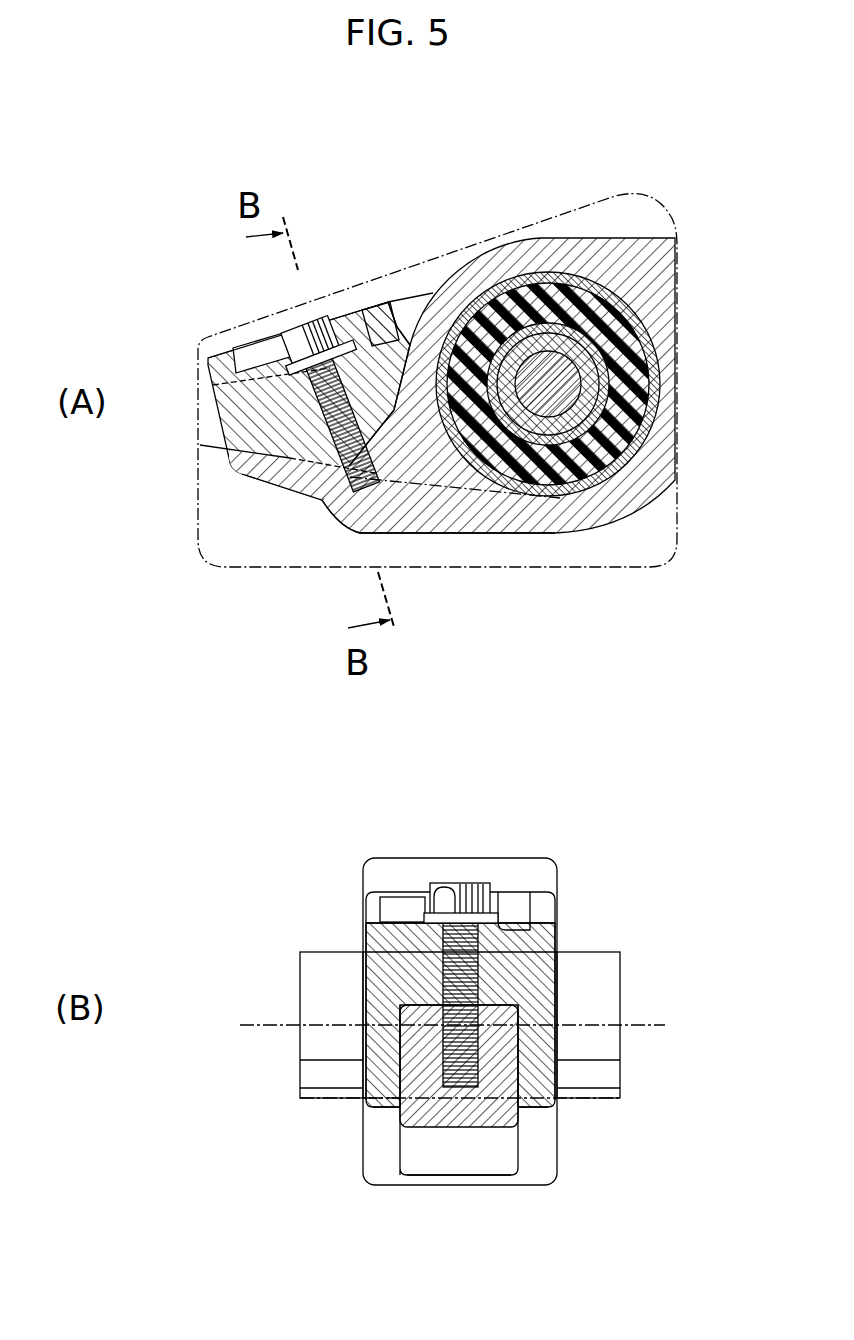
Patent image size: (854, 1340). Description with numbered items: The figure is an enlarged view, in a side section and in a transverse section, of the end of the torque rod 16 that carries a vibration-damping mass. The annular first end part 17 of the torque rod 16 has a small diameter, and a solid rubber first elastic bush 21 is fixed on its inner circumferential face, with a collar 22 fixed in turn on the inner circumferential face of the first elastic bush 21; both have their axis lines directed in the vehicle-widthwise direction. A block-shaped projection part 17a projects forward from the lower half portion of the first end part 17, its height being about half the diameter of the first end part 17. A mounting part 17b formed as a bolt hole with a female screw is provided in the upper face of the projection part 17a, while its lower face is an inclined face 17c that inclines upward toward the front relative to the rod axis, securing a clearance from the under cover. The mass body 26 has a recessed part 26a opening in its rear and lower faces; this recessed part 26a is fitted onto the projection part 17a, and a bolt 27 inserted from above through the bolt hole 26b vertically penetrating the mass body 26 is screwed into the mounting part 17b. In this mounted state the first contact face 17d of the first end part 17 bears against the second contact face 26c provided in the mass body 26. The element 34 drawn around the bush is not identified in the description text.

The torque rod 16 is at (652, 228).
The first end part 17 is at (618, 527).
The projection part 17a is at (372, 530).
The mounting part 17b is at (337, 433).
The inclined face 17c is at (441, 535).
The first contact face 17d is at (379, 302).
The first elastic bush 21 is at (573, 300).
The collar 22 is at (662, 358).
The mass body 26 is at (233, 461).
The recessed part 26a is at (322, 498).
The bolt hole 26b is at (210, 362).
The second contact face 26c is at (392, 337).
The bolt 27 is at (305, 328).
The bearing 34 is at (535, 266).